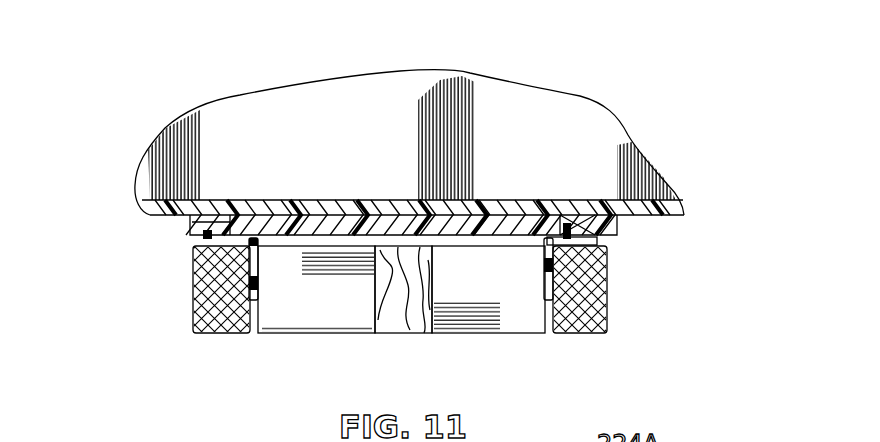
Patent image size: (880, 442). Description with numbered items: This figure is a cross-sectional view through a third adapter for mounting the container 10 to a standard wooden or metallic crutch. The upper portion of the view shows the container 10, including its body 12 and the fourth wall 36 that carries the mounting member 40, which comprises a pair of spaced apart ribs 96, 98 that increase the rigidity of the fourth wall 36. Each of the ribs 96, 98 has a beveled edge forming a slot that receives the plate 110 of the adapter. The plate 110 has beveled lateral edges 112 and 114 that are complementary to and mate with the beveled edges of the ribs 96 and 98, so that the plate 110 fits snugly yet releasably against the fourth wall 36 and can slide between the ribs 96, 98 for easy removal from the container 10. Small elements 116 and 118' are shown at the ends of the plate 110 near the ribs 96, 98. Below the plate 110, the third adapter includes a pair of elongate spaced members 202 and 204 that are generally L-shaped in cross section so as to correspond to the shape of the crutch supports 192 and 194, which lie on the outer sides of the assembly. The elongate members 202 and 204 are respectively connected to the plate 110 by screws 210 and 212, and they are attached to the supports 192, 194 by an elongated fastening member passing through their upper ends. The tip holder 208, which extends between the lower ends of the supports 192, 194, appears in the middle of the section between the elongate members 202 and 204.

The container 10 is at (582, 77).
The panel 12 is at (389, 116).
The fourth wall 36 is at (672, 183).
The mounting member 40 is at (512, 215).
The rib 96 is at (200, 233).
The rib 98 is at (590, 240).
The plate 110 is at (348, 232).
The beveled lateral edge 112 is at (237, 215).
The beveled lateral edge 114 is at (558, 226).
The fastener 116 is at (203, 238).
The right clip 118' is at (663, 275).
The support 192 is at (193, 310).
The support 194 is at (607, 313).
The elongate member 202 is at (253, 288).
The elongate member 204 is at (547, 280).
The tip holder 208 is at (393, 333).
The screw 210 is at (193, 259).
The screw 212 is at (617, 230).